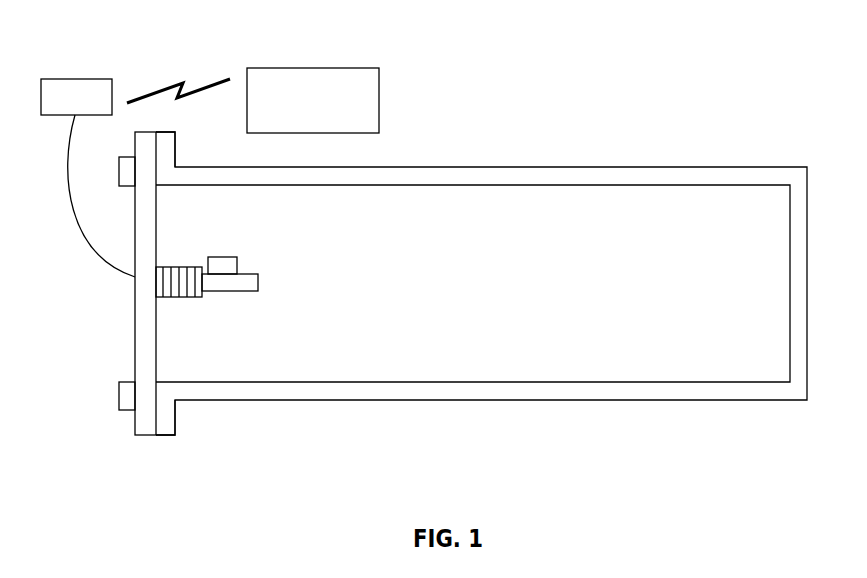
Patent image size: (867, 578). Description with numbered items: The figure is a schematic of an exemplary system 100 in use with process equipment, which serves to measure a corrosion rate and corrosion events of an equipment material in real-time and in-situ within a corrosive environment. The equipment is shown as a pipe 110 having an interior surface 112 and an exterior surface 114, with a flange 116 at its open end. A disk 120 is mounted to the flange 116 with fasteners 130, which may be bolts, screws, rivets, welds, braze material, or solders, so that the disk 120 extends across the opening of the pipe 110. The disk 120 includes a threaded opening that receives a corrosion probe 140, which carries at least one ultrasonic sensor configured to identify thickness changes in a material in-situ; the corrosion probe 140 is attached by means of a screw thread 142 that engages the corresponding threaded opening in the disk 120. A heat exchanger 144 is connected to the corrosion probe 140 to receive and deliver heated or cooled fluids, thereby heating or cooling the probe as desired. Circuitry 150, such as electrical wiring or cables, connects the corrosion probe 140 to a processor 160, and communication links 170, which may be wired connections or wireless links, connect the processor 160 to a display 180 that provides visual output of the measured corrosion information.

The system 100 is at (422, 271).
The pipe 110 is at (481, 283).
The interior surface 112 is at (475, 185).
The exterior surface 114 is at (407, 167).
The flange 116 is at (169, 418).
The disk 120 is at (135, 423).
The fasteners 130 is at (118, 168).
The corrosion probe 140 is at (207, 332).
The screw thread 142 is at (186, 283).
The heat exchanger 144 is at (225, 257).
The circuitry 150 is at (70, 213).
The processor 160 is at (97, 107).
The communication links 170 is at (198, 83).
The display 180 is at (330, 107).